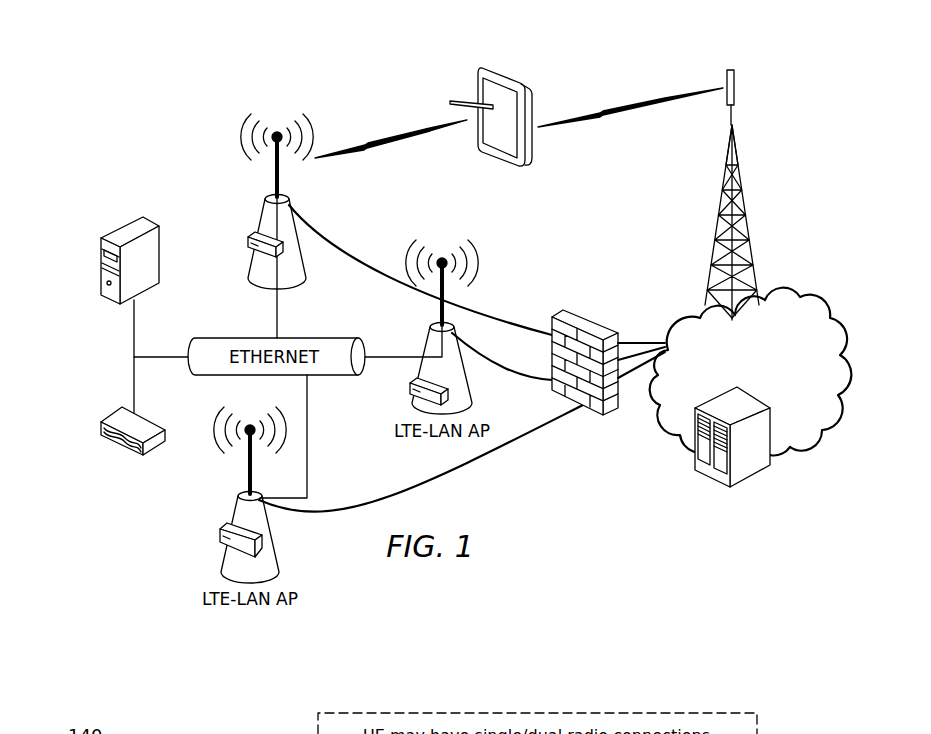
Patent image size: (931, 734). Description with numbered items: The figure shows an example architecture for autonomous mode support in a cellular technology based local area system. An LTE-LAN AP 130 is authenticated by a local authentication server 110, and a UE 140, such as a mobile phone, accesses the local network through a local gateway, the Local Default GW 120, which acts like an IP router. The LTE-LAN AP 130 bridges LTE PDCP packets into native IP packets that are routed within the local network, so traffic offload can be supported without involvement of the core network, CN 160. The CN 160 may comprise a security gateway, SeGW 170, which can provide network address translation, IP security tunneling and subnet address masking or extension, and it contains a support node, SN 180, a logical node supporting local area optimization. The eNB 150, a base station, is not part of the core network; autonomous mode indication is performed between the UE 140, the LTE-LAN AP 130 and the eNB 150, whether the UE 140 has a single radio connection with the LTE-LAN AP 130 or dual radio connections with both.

The local authentication server 110 is at (120, 227).
The Local Default GW 120 is at (116, 452).
The LTE-LAN AP 130 is at (291, 209).
The UE 140 is at (514, 75).
The eNB 150 is at (752, 224).
The CN 160 is at (797, 288).
The SeGW 170 is at (598, 320).
The SN 180 is at (752, 462).